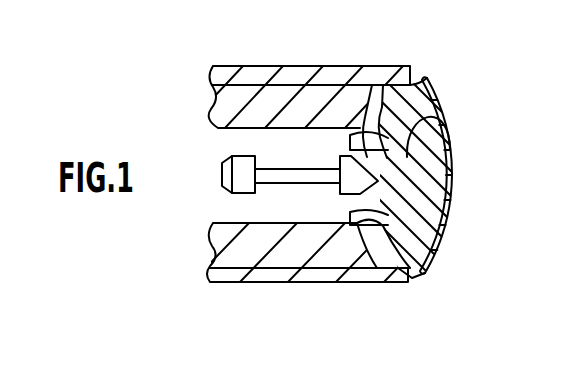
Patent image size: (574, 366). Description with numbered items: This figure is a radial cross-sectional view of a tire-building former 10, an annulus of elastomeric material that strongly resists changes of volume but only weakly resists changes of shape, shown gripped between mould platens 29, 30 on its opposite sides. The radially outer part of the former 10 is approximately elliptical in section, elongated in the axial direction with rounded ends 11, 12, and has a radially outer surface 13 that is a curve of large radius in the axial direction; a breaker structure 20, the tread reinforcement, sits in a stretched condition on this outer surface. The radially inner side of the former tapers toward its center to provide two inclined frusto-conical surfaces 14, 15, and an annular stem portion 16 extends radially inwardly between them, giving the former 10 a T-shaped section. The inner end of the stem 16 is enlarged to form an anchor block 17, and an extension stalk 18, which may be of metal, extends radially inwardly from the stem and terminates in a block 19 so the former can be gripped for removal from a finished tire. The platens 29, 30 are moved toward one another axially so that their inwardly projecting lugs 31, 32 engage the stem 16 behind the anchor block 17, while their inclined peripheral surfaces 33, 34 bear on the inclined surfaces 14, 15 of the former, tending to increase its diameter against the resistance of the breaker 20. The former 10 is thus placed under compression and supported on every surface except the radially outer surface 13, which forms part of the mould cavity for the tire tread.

The former 10 is at (446, 154).
The rounded end 11 is at (410, 80).
The rounded end 12 is at (413, 266).
The radially outer surface 13 is at (455, 190).
The inclined frusto-conical surface 14 is at (387, 110).
The inclined frusto-conical surface 15 is at (377, 260).
The stem portion 16 is at (430, 100).
The anchor block 17 is at (308, 181).
The extension stalk 18 is at (282, 173).
The block 19 is at (240, 180).
The breaker structure 20 is at (438, 238).
The platen 29 is at (261, 81).
The platen 30 is at (232, 262).
The inwardly projecting lug 31 is at (363, 148).
The inwardly projecting lug 32 is at (360, 204).
The inclined peripheral surface 33 is at (318, 277).
The inclined peripheral surface 34 is at (373, 100).